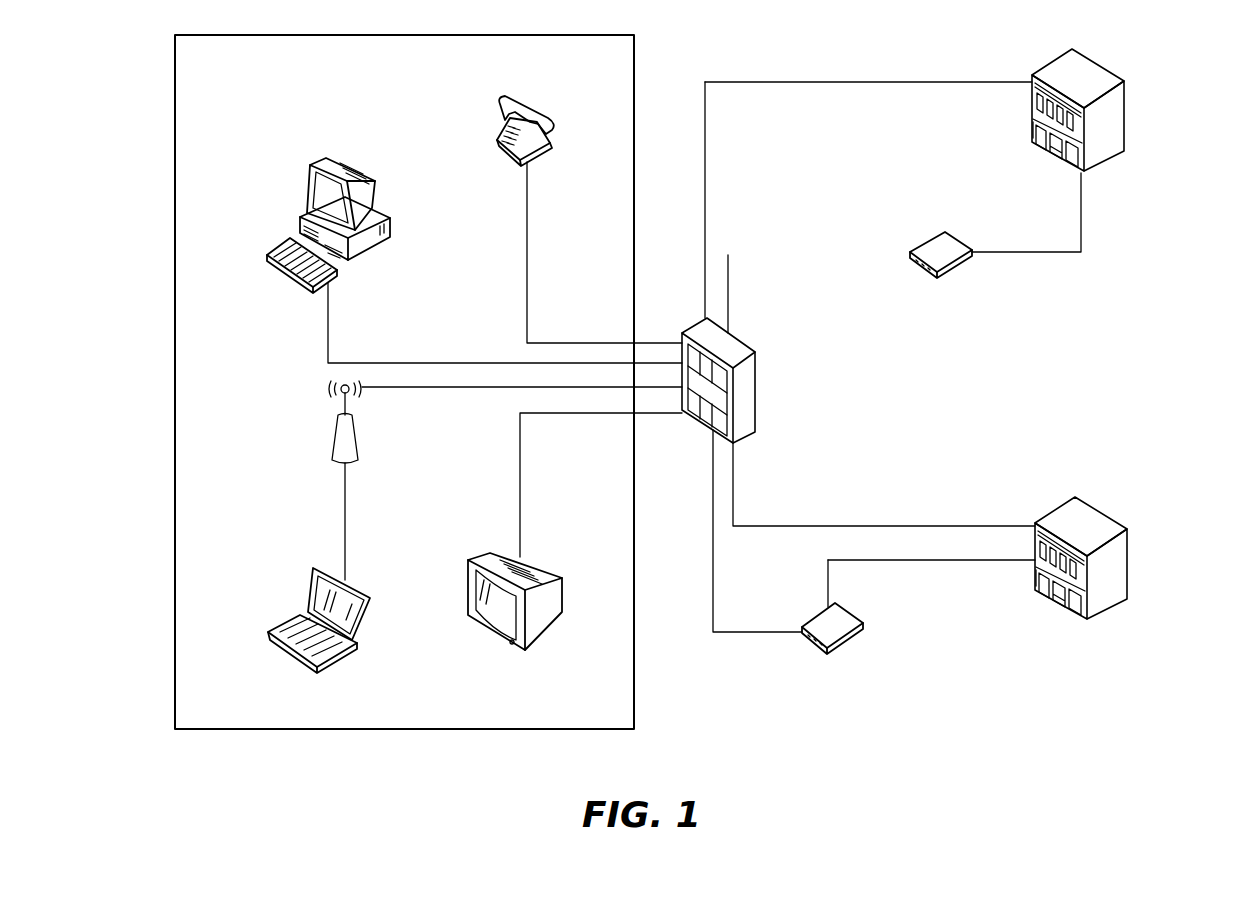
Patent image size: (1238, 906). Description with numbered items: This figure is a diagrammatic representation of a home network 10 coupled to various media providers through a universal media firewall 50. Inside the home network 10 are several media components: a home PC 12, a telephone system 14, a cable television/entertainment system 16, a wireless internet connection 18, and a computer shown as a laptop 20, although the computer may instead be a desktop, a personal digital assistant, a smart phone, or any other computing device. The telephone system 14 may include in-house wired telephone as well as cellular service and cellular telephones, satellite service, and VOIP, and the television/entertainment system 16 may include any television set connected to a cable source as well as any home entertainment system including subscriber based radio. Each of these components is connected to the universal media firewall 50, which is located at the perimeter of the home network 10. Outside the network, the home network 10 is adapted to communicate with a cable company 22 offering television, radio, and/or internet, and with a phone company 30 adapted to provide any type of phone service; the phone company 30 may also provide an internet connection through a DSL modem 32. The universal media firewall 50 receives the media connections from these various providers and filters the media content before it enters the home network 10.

The home network 10 is at (634, 54).
The home PC 12 is at (312, 178).
The telephone system 14 is at (500, 108).
The cable television/entertainment system 16 is at (490, 558).
The wireless internet connection 18 is at (330, 387).
The laptop 20 is at (290, 622).
The cable company 22 is at (1125, 97).
The phone company 30 is at (1127, 540).
The DSL modem 32 is at (860, 612).
The universal media firewall 50 is at (755, 383).